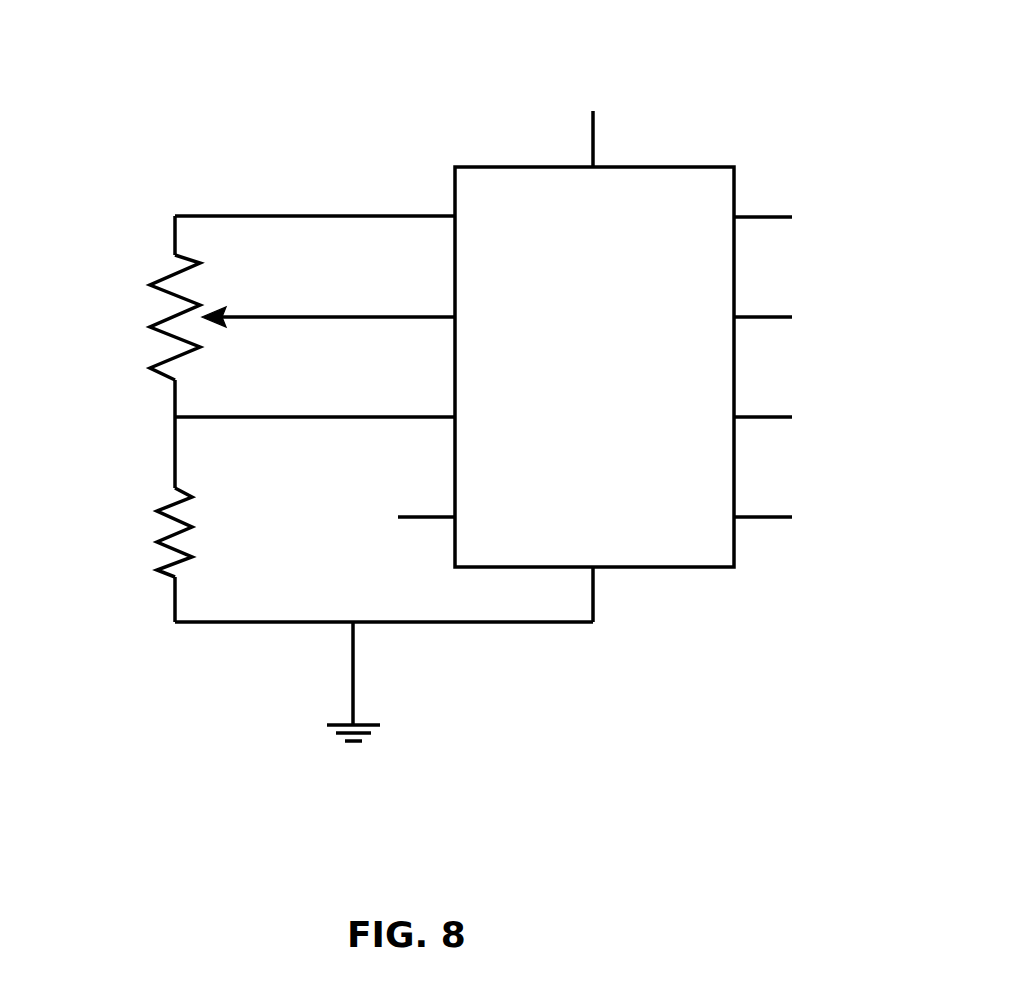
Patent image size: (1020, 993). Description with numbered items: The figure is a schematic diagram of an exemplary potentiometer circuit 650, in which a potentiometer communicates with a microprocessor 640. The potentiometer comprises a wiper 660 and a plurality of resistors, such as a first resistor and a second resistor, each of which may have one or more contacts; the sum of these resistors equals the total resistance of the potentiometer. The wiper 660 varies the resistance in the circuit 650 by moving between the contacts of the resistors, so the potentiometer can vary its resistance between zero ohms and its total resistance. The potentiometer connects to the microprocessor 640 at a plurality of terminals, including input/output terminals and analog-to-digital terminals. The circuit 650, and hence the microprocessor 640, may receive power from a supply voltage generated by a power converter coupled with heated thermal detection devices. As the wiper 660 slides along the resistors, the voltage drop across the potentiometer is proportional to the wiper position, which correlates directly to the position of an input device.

The circuit 650 is at (843, 95).
The microprocessor 640 is at (674, 406).
The wiper 660 is at (277, 314).